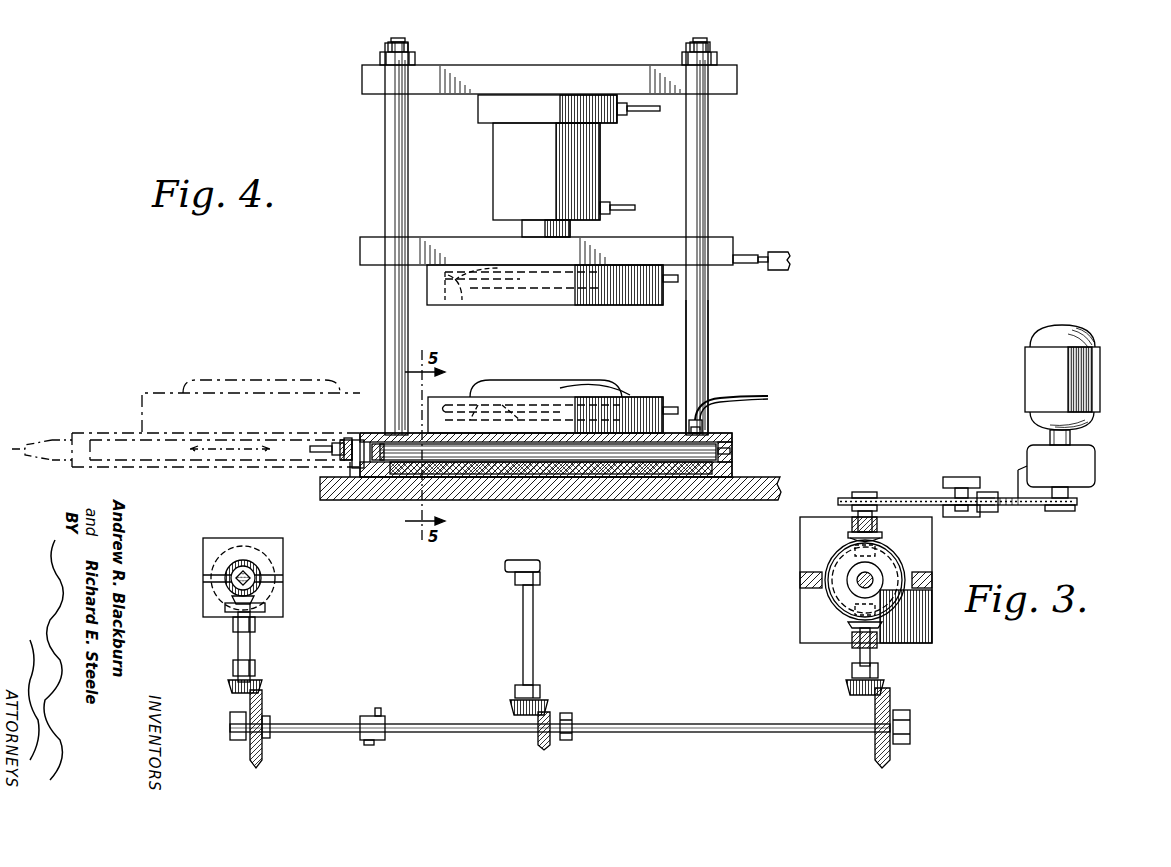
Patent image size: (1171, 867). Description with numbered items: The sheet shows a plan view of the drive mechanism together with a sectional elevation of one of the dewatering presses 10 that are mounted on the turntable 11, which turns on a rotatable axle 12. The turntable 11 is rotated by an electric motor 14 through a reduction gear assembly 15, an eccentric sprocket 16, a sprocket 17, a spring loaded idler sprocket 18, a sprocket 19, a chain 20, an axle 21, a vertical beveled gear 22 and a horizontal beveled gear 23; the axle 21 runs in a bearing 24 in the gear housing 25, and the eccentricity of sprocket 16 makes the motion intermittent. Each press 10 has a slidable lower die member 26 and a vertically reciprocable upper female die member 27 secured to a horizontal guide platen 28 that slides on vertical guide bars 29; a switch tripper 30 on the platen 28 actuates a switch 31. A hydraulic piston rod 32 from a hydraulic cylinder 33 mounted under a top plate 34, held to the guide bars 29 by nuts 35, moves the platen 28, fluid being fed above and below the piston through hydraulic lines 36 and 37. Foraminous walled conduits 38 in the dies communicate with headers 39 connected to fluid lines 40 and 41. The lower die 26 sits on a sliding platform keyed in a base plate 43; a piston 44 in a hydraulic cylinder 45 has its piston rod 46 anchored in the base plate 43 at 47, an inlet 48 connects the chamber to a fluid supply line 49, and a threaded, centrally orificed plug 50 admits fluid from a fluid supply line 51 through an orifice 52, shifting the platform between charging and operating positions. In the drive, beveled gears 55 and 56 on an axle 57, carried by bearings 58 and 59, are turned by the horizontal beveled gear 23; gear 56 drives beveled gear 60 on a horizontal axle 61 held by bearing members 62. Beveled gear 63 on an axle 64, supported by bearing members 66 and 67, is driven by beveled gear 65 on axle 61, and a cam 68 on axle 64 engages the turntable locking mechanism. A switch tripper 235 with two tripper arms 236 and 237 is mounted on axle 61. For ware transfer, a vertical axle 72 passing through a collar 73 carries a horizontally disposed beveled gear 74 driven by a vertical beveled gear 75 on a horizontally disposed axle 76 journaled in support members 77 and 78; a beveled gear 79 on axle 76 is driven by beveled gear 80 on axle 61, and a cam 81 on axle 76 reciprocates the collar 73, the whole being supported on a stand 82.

In FIG. 4, the dewatering press 10 is at (374, 132).
In FIG. 4, the turntable 11 is at (645, 500).
In FIG. 3, the rotatable axle 12 is at (876, 576).
In FIG. 3, the electric motor 14 is at (1025, 388).
In FIG. 3, the reduction gear assembly 15 is at (1030, 455).
In FIG. 3, the eccentric sprocket 16 is at (1060, 503).
In FIG. 3, the sprocket 17 is at (955, 492).
In FIG. 3, the spring loaded idler sprocket 18 is at (990, 512).
In FIG. 3, the sprocket 19 is at (868, 486).
In FIG. 3, the chain 20 is at (895, 498).
In FIG. 3, the axle 21 is at (882, 536).
In FIG. 3, the vertical beveled gear 22 is at (848, 533).
In FIG. 3, the horizontal beveled gear 23 is at (832, 597).
In FIG. 3, the bearing 24 is at (850, 520).
In FIG. 3, the gear housing 25 is at (800, 551).
In FIG. 4, the lower die member 26 is at (525, 385).
In FIG. 4, the upper female die member 27 is at (556, 305).
In FIG. 4, the horizontal guide platen 28 is at (360, 254).
In FIG. 4, the vertical guide bars 29 is at (708, 327).
In FIG. 4, the switch tripper 30 is at (746, 255).
In FIG. 4, the switch 31 is at (780, 252).
In FIG. 4, the hydraulic piston rod 32 is at (520, 228).
In FIG. 4, the hydraulic cylinder 33 is at (493, 165).
In FIG. 4, the top plate 34 is at (514, 70).
In FIG. 4, the nuts 35 is at (380, 52).
In FIG. 4, the hydraulic line 36 is at (646, 112).
In FIG. 4, the hydraulic line 37 is at (618, 206).
In FIG. 4, the foraminous walled conduits 38 is at (455, 305).
In FIG. 4, the headers 39 is at (468, 262).
In FIG. 4, the fluid line 40 is at (673, 404).
In FIG. 4, the fluid line 41 is at (671, 283).
In FIG. 4, the base plate 43 is at (732, 468).
In FIG. 4, the piston 44 is at (397, 472).
In FIG. 4, the hydraulic cylinder 45 is at (380, 472).
In FIG. 4, the piston rod 46 is at (500, 456).
In FIG. 4, the anchor point 47 is at (730, 450).
In FIG. 4, the inlet 48 is at (706, 430).
In FIG. 4, the fluid supply line 49 is at (728, 402).
In FIG. 4, the threaded centrally orificed plug 50 is at (360, 470).
In FIG. 4, the fluid supply line 51 is at (326, 443).
In FIG. 4, the orifice 52 is at (348, 435).
In FIG. 3, the beveled gear 55 is at (886, 623).
In FIG. 3, the beveled gear 56 is at (848, 688).
In FIG. 3, the axle 57 is at (860, 655).
In FIG. 3, the bearing 58 is at (884, 640).
In FIG. 3, the bearing 59 is at (880, 670).
In FIG. 3, the beveled gear 60 is at (875, 748).
In FIG. 3, the horizontal axle 61 is at (680, 720).
In FIG. 3, the bearing members 62 is at (907, 726).
In FIG. 3, the beveled gear 63 is at (508, 706).
In FIG. 3, the axle 64 is at (522, 617).
In FIG. 3, the beveled gear 65 is at (540, 740).
In FIG. 3, the bearing member 66 is at (541, 690).
In FIG. 3, the bearing member 67 is at (519, 560).
In FIG. 3, the cam 68 is at (541, 578).
In FIG. 3, the vertical axle 72 is at (264, 566).
In FIG. 3, the collar 73 is at (215, 556).
In FIG. 3, the horizontally disposed beveled gear 74 is at (255, 562).
In FIG. 3, the vertical beveled gear 75 is at (228, 594).
In FIG. 3, the horizontally disposed axle 76 is at (252, 648).
In FIG. 3, the journaled support member 77 is at (232, 626).
In FIG. 3, the journaled support member 78 is at (234, 668).
In FIG. 3, the beveled gear 79 is at (230, 688).
In FIG. 3, the beveled gear 80 is at (262, 708).
In FIG. 3, the cam 81 is at (270, 607).
In FIG. 3, the stand 82 is at (224, 540).
In FIG. 3, the switch tripper 235 is at (380, 752).
In FIG. 3, the tripper arm 236 is at (368, 742).
In FIG. 3, the tripper arm 237 is at (378, 708).